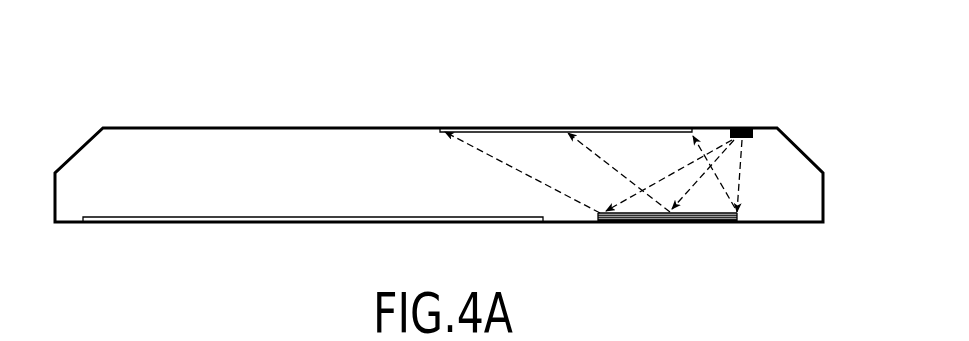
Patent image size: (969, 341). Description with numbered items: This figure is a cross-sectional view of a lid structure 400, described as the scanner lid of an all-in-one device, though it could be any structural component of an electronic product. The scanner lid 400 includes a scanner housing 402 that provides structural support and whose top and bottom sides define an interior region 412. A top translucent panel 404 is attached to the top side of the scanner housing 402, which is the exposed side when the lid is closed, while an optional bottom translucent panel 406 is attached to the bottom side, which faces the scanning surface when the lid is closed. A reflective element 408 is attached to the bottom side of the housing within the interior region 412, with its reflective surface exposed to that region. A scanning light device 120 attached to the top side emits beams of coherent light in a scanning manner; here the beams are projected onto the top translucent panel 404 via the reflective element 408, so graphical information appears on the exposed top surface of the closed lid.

The lid structure 400 is at (737, 52).
The scanner housing 402 is at (83, 147).
The top translucent panel 404 is at (517, 126).
The bottom translucent panel 406 is at (293, 223).
The reflective element 408 is at (708, 215).
The interior region 412 is at (245, 188).
The scanning light device 120 is at (752, 139).